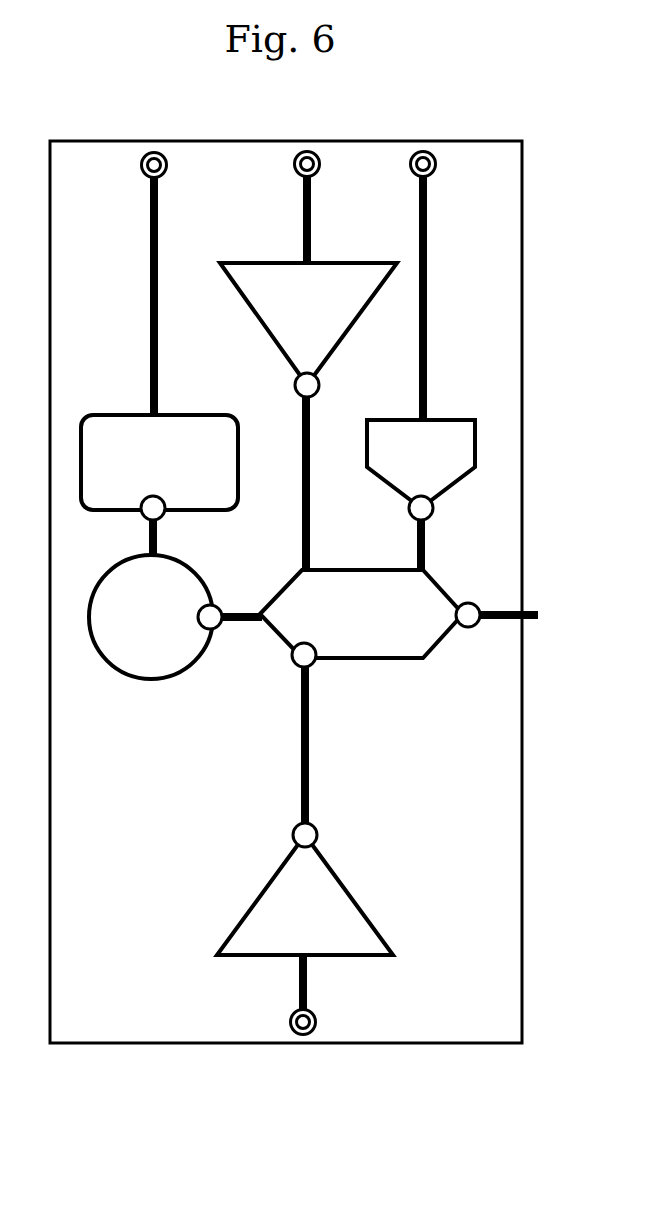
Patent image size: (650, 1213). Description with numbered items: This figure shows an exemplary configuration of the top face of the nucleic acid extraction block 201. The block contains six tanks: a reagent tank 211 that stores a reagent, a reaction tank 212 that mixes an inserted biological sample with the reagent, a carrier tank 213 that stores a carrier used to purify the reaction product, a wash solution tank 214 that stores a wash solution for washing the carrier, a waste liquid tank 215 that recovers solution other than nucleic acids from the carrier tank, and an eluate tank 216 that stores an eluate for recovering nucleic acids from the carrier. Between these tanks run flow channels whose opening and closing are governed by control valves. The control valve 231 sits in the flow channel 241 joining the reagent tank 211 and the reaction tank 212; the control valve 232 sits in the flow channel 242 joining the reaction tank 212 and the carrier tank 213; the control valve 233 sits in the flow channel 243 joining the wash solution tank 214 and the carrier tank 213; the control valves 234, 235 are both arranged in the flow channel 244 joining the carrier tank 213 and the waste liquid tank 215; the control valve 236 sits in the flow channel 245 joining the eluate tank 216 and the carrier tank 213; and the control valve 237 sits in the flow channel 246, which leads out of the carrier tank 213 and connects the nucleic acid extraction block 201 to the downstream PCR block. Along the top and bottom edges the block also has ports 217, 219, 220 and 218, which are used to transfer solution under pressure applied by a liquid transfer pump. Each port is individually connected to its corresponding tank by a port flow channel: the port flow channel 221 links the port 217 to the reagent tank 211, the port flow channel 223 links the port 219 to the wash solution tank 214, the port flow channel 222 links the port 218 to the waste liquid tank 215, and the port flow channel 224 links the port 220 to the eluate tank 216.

The nucleic acid extraction block 201 is at (286, 649).
The reagent tank 211 is at (159, 462).
The reaction tank 212 is at (151, 617).
The carrier tank 213 is at (361, 614).
The wash solution tank 214 is at (308, 324).
The waste liquid tank 215 is at (305, 895).
The eluate tank 216 is at (421, 464).
The port 217 is at (154, 146).
The port 218 is at (303, 1047).
The port 219 is at (307, 145).
The port 220 is at (423, 145).
The port flow channel 221 is at (150, 235).
The port flow channel 222 is at (298, 981).
The port flow channel 223 is at (302, 235).
The port flow channel 224 is at (417, 235).
The control valve 231 is at (168, 520).
The control valve 232 is at (218, 630).
The control valve 233 is at (321, 382).
The control valve 234 is at (315, 664).
The control valve 235 is at (292, 832).
The control valve 236 is at (435, 505).
The control valve 237 is at (469, 602).
The flow channel 241 is at (149, 536).
The flow channel 242 is at (244, 624).
The flow channel 243 is at (302, 412).
The flow channel 244 is at (298, 785).
The flow channel 245 is at (417, 542).
The flow channel 246 is at (496, 624).